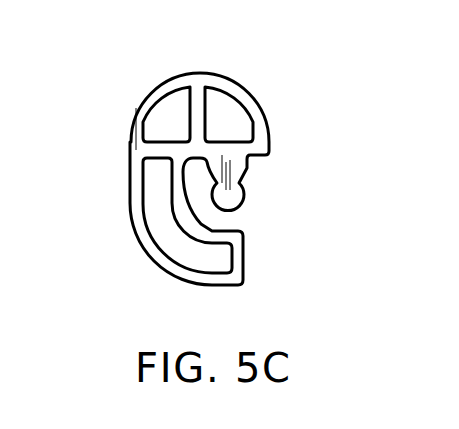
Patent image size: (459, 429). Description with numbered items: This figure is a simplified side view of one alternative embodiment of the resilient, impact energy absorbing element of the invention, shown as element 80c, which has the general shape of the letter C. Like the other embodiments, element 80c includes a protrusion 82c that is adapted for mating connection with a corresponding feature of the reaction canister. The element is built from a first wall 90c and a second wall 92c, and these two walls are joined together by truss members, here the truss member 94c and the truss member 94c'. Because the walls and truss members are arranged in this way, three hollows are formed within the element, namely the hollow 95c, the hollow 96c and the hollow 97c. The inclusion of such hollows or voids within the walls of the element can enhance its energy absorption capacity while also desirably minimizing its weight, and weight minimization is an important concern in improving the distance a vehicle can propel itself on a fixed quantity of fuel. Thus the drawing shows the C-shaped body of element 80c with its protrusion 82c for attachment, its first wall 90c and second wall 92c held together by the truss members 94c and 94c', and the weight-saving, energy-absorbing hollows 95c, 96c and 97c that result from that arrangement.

The resilient, impact energy absorbing element 80c is at (149, 70).
The protrusion 82c is at (243, 195).
The first wall 90c is at (140, 131).
The second wall 92c is at (240, 228).
The truss member 94c is at (117, 165).
The truss member 94c' is at (222, 81).
The hollow 95c is at (172, 233).
The hollow 96c is at (168, 110).
The hollow 97c is at (242, 122).